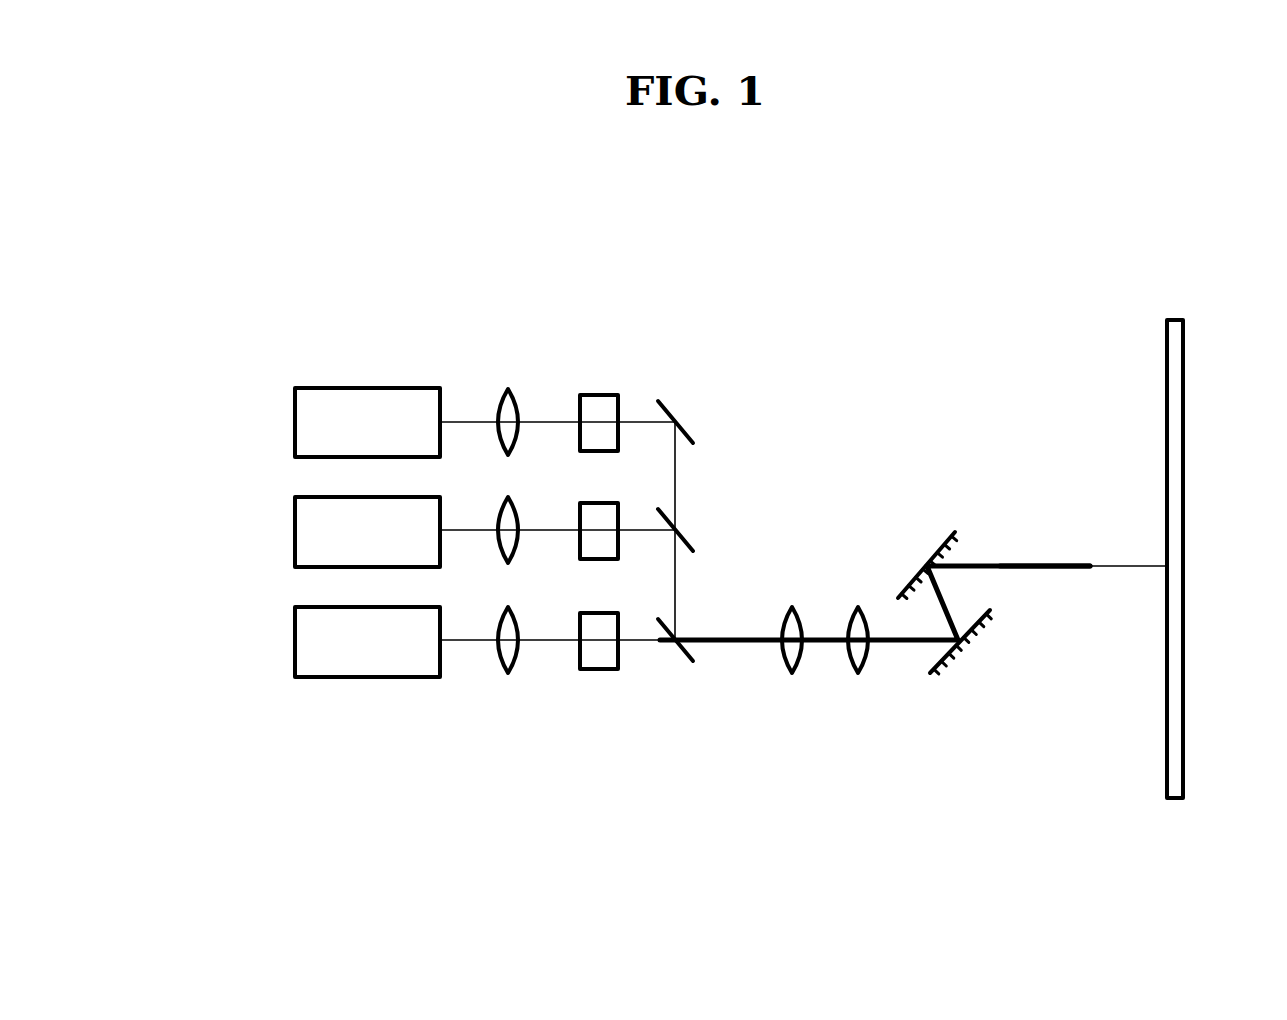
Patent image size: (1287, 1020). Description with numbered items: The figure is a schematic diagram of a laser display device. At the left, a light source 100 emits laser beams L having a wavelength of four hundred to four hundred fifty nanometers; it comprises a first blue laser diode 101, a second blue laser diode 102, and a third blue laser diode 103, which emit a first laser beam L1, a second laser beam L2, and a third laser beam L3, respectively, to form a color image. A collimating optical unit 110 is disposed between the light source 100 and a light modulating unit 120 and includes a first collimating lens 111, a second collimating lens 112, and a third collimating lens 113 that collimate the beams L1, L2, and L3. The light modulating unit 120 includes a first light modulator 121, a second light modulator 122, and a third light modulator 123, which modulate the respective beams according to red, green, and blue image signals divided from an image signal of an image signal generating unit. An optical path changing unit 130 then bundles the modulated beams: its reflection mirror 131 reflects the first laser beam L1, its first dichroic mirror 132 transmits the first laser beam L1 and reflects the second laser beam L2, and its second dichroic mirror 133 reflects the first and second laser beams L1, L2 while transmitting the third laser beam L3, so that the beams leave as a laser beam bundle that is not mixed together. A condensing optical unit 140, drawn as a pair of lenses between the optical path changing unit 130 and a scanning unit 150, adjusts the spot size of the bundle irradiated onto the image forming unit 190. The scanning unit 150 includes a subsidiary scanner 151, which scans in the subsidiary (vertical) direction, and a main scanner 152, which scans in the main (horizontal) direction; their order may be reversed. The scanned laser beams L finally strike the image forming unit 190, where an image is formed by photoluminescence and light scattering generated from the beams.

The light source 100 is at (196, 423).
The first blue laser diode 101 is at (295, 423).
The second blue laser diode 102 is at (295, 531).
The third blue laser diode 103 is at (295, 641).
The first laser beam L1 is at (458, 428).
The second laser beam L2 is at (458, 537).
The third laser beam L3 is at (458, 647).
The collimating optical unit 110 is at (508, 338).
The first collimating lens 111 is at (500, 400).
The second collimating lens 112 is at (500, 508).
The third collimating lens 113 is at (500, 618).
The light modulating unit 120 is at (598, 338).
The first light modulator 121 is at (580, 397).
The second light modulator 122 is at (580, 505).
The third light modulator 123 is at (580, 615).
The optical path changing unit 130 is at (709, 338).
The reflection mirror 131 is at (678, 419).
The first dichroic mirror 132 is at (678, 528).
The second dichroic mirror 133 is at (678, 638).
The condensing optical unit 140 is at (849, 672).
The scanning unit 150 is at (903, 790).
The subsidiary scanner 151 is at (933, 677).
The main scanner 152 is at (955, 532).
The laser beams L is at (1048, 563).
The image forming unit 190 is at (1175, 800).